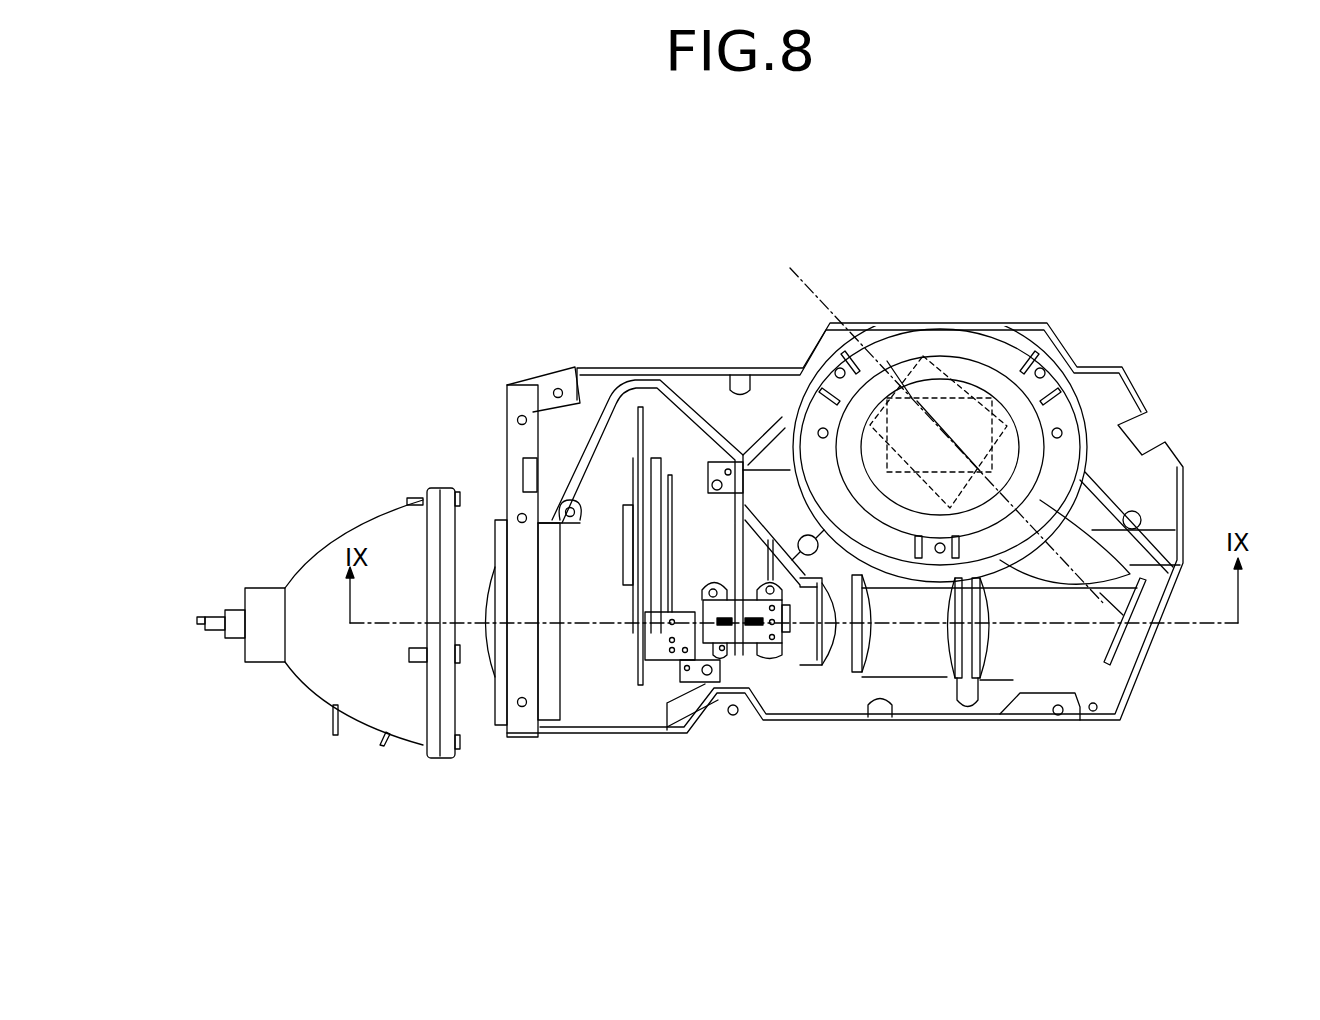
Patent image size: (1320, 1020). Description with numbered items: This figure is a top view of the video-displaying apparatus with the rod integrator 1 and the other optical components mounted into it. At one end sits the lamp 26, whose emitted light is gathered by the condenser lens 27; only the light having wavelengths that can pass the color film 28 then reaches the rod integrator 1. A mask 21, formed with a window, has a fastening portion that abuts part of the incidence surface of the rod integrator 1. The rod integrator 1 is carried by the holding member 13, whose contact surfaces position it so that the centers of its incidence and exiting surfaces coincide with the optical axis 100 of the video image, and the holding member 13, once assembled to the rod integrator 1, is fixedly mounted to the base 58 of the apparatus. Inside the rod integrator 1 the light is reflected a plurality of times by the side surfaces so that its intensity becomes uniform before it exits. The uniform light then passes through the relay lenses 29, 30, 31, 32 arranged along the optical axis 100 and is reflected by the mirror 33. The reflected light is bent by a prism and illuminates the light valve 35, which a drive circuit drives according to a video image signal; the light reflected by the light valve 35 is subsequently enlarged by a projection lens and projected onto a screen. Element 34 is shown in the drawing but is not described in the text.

The rod integrator 1 is at (786, 640).
The holding member 13 is at (748, 650).
The mask 21 is at (658, 652).
The lamp 26 is at (325, 573).
The condenser lens 27 is at (493, 647).
The color film 28 is at (625, 428).
The relay lens 29 is at (838, 642).
The relay lens 30 is at (932, 704).
The relay lens 31 is at (945, 648).
The relay lens 32 is at (993, 648).
The mirror 33 is at (1122, 643).
The lens mount ring 34 is at (905, 395).
The light valve 35 is at (962, 390).
The base 58 is at (523, 445).
The optical axis 100 is at (583, 623).